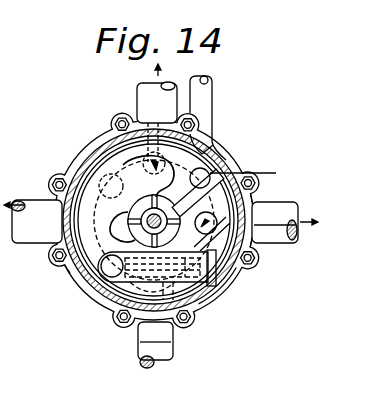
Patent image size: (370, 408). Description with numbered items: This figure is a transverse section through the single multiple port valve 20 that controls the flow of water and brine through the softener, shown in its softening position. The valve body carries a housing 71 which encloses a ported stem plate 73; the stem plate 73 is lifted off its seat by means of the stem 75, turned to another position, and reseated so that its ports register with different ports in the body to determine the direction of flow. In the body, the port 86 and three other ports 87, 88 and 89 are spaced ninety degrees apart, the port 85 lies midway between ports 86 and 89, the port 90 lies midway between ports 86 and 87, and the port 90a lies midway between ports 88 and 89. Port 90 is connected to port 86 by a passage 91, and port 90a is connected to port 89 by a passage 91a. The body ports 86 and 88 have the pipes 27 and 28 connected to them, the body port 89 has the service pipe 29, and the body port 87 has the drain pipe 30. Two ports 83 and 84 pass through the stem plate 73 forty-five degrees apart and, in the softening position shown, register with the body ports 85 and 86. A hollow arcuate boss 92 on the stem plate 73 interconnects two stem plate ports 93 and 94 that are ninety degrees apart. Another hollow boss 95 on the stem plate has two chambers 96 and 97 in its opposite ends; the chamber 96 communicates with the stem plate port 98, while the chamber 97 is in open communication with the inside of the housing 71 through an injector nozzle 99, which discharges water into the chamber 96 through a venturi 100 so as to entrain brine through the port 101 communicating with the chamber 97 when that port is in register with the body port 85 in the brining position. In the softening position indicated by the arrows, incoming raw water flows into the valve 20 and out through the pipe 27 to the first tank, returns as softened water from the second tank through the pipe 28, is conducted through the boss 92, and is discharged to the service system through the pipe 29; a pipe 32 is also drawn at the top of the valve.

The multiple port valve 20 is at (232, 167).
The pipe 27 is at (270, 245).
The pipe 28 is at (34, 243).
The service pipe 29 is at (137, 92).
The drain pipe 30 is at (173, 352).
The pipe 32 is at (213, 95).
The housing 71 is at (250, 212).
The stem plate 73 is at (206, 148).
The stem 75 is at (140, 216).
The port 83 is at (253, 177).
The port 84 is at (250, 233).
The port 85 is at (228, 147).
The port 86 is at (262, 201).
The port 87 is at (139, 332).
The port 88 is at (66, 213).
The port 89 is at (153, 132).
The port 90 is at (226, 299).
The port 90a is at (102, 151).
The passage 91 is at (200, 241).
The passage 91a is at (117, 132).
The hollow arcuate boss 92 is at (100, 180).
The port 93 is at (78, 273).
The port 94 is at (195, 182).
The hollow boss 95 is at (118, 258).
The chamber 96 is at (113, 314).
The chamber 97 is at (211, 306).
The port 98 is at (102, 286).
The injector nozzle 99 is at (217, 268).
The venturi 100 is at (155, 341).
The port 101 is at (240, 284).